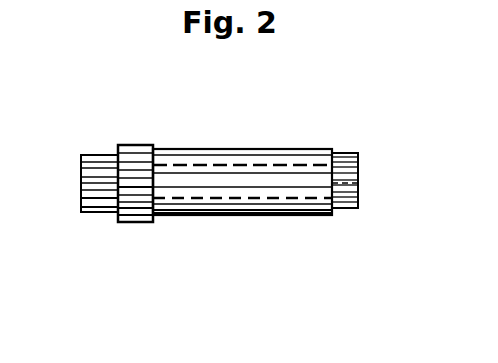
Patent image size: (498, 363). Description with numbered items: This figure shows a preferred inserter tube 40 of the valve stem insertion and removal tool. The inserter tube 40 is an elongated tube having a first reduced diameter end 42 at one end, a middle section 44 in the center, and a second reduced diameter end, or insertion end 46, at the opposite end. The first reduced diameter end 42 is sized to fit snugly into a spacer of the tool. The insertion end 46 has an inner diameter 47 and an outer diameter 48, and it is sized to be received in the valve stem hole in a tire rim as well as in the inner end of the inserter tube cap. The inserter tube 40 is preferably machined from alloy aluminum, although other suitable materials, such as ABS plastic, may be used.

The inserter tube 40 is at (220, 125).
The first reduced diameter end 42 is at (102, 202).
The middle section 44 is at (242, 208).
The insertion end 46 is at (347, 208).
The inner diameter 47 is at (358, 183).
The outer diameter 48 is at (358, 157).